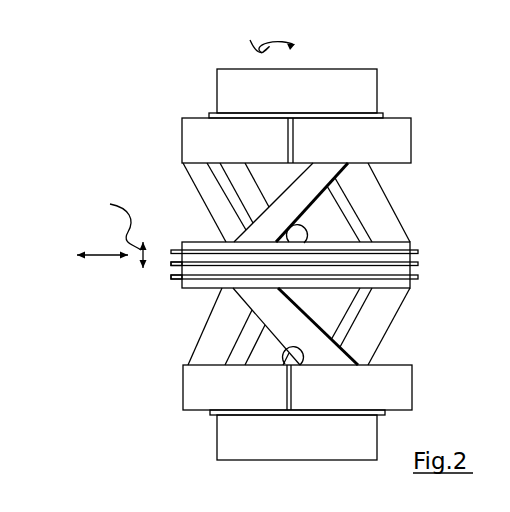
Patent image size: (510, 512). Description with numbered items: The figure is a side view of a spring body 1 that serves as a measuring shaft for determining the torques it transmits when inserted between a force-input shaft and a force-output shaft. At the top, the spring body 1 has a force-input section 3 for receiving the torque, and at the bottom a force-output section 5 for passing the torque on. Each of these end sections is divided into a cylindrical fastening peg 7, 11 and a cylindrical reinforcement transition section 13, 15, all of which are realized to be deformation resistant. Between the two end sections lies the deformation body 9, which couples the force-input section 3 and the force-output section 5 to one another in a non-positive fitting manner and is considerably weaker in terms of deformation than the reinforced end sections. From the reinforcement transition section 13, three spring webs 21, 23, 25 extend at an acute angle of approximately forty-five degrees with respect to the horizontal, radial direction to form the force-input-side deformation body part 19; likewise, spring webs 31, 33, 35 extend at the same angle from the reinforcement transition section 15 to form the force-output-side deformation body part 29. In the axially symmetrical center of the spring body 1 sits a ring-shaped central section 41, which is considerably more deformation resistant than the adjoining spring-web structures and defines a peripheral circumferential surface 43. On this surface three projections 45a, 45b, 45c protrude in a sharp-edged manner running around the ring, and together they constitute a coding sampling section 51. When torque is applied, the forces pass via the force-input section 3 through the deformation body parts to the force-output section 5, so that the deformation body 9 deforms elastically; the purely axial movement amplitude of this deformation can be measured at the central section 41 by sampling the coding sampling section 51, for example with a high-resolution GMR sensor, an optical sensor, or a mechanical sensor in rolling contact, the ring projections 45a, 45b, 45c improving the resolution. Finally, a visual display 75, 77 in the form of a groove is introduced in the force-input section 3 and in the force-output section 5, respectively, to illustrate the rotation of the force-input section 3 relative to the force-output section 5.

The spring body 1 is at (424, 82).
The force-input section 3 is at (384, 95).
The force-output section 5 is at (213, 430).
The fastening peg 7 is at (232, 88).
The deformation body 9 is at (460, 198).
The fastening peg 11 is at (352, 437).
The reinforcement transition section 13 is at (200, 128).
The reinforcement transition section 15 is at (389, 393).
The force-input-side deformation body part 19 is at (397, 200).
The spring web 21 is at (385, 220).
The spring web 23 is at (257, 222).
The spring web 25 is at (203, 176).
The force-output-side deformation body part 29 is at (404, 308).
The spring web 31 is at (376, 338).
The spring web 33 is at (243, 300).
The spring web 35 is at (213, 347).
The central section 41 is at (420, 255).
The circumferential surface 43 is at (171, 266).
The ring projection 45a is at (410, 243).
The ring projection 45b is at (418, 265).
The ring projection 45c is at (418, 279).
The coding sampling section 51 is at (174, 281).
The visual display 75 is at (293, 143).
The visual display 77 is at (291, 380).